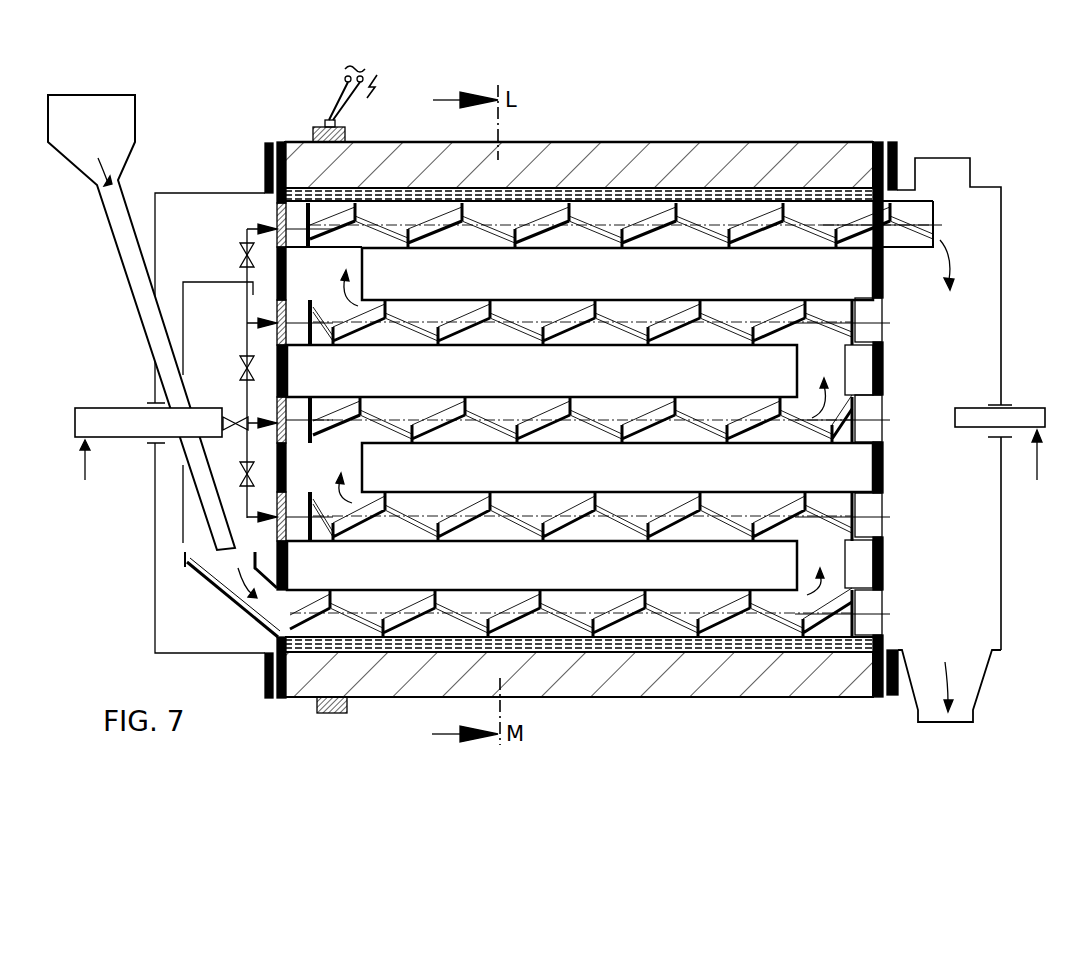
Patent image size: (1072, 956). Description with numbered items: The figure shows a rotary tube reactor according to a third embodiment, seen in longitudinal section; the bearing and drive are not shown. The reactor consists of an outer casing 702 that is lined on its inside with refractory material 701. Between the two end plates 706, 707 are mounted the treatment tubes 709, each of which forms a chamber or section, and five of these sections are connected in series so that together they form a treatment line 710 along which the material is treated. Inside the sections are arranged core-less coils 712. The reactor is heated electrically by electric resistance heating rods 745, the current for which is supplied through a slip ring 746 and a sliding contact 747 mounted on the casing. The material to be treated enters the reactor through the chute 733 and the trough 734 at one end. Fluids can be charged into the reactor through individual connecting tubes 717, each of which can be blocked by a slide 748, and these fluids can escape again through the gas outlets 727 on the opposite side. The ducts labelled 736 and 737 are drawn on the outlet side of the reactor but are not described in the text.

The refractory material 701 is at (707, 163).
The outer casing 702 is at (752, 141).
The end plate 706 is at (276, 143).
The end plate 707 is at (878, 141).
The treatment tube 709 is at (632, 210).
The treatment line 710 is at (817, 187).
The core-less coil 712 is at (447, 217).
The connecting tube 717 is at (248, 330).
The gas outlet 727 is at (855, 330).
The chute 733 is at (120, 238).
The trough 734 is at (185, 560).
The gas outlet duct 736 is at (955, 170).
The discharge hopper 737 is at (923, 695).
The electric resistance heating rod 745 is at (587, 193).
The slip ring 746 is at (313, 134).
The sliding contact 747 is at (328, 121).
The slide 748 is at (246, 356).